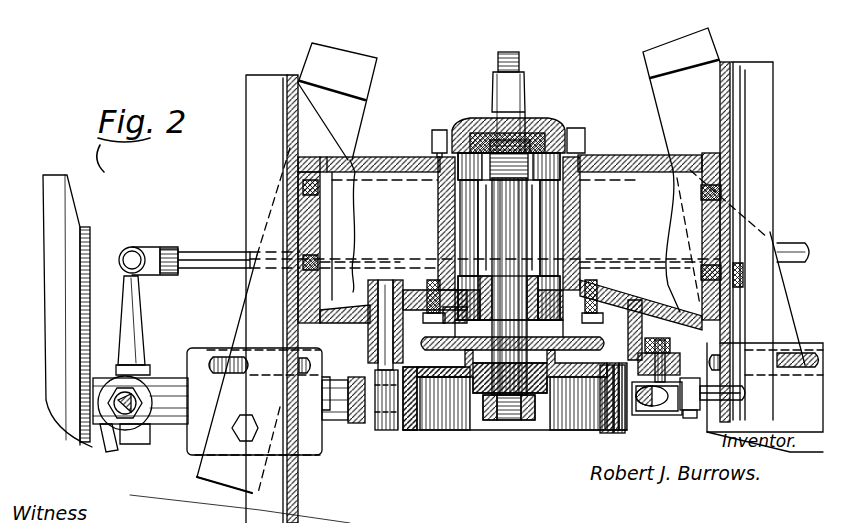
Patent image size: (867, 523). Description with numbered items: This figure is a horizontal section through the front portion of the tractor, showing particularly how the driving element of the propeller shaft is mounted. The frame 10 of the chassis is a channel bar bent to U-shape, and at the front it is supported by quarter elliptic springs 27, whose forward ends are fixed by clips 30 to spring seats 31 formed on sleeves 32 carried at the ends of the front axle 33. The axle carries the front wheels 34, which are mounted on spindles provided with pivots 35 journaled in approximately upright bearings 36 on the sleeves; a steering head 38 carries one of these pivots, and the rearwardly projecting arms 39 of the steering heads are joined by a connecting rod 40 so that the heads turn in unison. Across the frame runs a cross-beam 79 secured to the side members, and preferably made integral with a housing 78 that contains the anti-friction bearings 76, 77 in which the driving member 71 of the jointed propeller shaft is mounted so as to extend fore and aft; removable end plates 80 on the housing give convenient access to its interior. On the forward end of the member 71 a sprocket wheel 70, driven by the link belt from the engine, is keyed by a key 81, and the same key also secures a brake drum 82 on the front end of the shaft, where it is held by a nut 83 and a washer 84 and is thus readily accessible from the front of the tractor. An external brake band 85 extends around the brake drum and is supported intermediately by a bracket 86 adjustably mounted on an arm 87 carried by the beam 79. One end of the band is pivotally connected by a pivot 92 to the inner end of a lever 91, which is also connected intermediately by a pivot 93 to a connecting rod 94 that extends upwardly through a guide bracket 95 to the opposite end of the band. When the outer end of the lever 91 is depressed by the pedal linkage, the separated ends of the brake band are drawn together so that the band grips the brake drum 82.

The frame 10 is at (288, 80).
The quarter elliptic springs 27 is at (362, 106).
The clips 30 is at (224, 357).
The spring seats 31 is at (188, 350).
The sleeves 32 is at (188, 438).
The front axle 33 is at (334, 423).
The front wheels 34 is at (90, 232).
The pivots 35 is at (128, 408).
The bearings 36 is at (100, 410).
The steering head 38 is at (95, 376).
The arms 39 is at (140, 298).
The connecting rod 40 is at (210, 252).
The sprocket wheel 70 is at (592, 337).
The driving member 71 is at (522, 218).
The anti-friction bearing 76 is at (580, 262).
The anti-friction bearing 77 is at (590, 160).
The housing 78 is at (436, 224).
The cross-beam 79 is at (396, 152).
The end plates 80 is at (440, 322).
The key 81 is at (478, 395).
The brake drum 82 is at (614, 435).
The nut 83 is at (506, 430).
The washer 84 is at (538, 400).
The brake band 85 is at (410, 432).
The bracket 86 is at (356, 425).
The arm 87 is at (388, 432).
The lever 91 is at (740, 388).
The pivot 92 is at (645, 418).
The pivot 93 is at (688, 420).
The connecting rod 94 is at (660, 410).
The guide bracket 95 is at (684, 368).